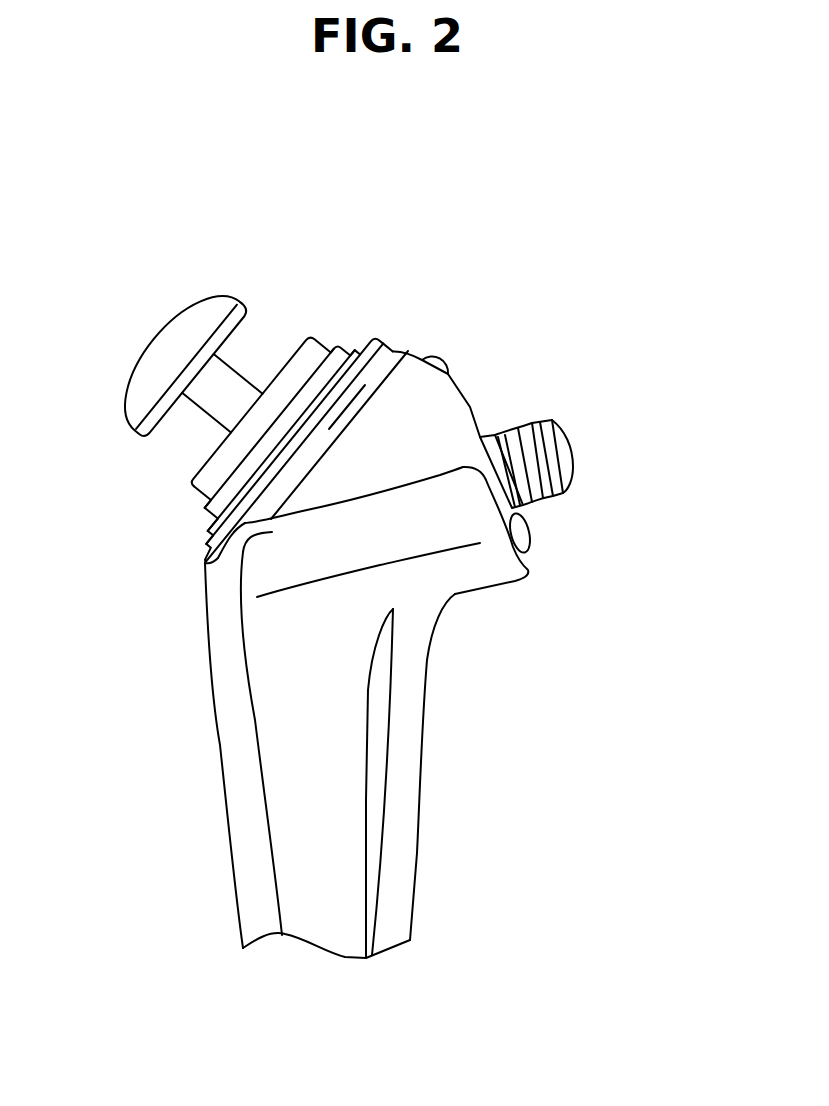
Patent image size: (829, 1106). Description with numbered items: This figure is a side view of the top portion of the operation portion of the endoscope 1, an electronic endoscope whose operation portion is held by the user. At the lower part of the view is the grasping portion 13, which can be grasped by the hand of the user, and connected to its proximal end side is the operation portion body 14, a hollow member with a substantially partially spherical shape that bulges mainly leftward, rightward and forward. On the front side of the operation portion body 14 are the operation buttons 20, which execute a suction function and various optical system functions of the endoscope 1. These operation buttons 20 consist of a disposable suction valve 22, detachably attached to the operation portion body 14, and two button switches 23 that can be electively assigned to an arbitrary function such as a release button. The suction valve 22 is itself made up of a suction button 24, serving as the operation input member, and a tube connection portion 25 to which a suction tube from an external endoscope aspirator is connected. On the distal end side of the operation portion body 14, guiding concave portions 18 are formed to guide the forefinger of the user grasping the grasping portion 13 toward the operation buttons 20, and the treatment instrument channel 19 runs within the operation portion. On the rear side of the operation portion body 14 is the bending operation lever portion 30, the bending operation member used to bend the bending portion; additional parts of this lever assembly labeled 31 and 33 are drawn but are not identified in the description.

The endoscope 1 is at (315, 284).
The grasping portion 13 is at (233, 877).
The operation portion body 14 is at (403, 350).
The guiding concave portions 18 is at (302, 568).
The treatment instrument channel 19 is at (503, 577).
The operation buttons 20 is at (657, 270).
The suction valve 22 is at (550, 411).
The button switches 23 is at (534, 530).
The suction button 24 is at (574, 449).
The tube connection portion 25 is at (441, 359).
The bending operation lever portion 30 is at (188, 275).
The spherical head 31 is at (147, 346).
The collar 33 is at (207, 457).